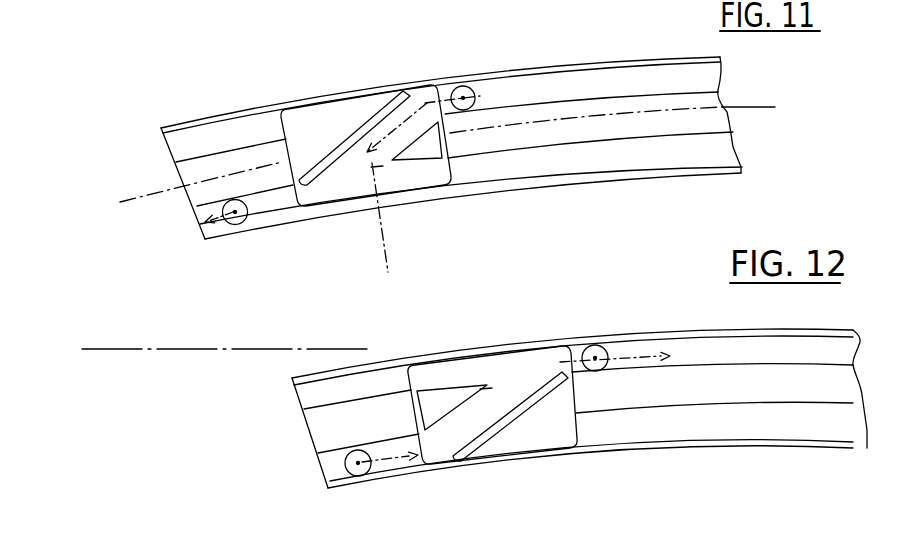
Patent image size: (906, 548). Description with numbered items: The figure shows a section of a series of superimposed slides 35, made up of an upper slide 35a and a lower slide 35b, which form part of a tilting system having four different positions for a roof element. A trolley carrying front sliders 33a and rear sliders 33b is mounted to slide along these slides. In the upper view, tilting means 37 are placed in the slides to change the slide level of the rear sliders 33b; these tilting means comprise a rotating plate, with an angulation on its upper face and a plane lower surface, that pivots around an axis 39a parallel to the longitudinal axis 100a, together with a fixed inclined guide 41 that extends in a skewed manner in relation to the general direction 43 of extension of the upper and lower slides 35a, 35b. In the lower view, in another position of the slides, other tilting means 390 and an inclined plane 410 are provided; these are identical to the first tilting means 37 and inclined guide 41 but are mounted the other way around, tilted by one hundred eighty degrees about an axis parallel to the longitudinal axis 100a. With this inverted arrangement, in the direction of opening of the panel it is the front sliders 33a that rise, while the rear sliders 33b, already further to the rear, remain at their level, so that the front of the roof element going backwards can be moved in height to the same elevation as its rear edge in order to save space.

In FIG. 11, the front sliders 33a is at (234, 226).
In FIG. 12, the front sliders 33a is at (600, 345).
In FIG. 11, the rear sliders 33b is at (463, 86).
In FIG. 12, the superimposed slides 35 is at (702, 456).
In FIG. 11, the upper slide 35a is at (556, 87).
In FIG. 12, the upper slide 35a is at (316, 394).
In FIG. 11, the lower slide 35b is at (285, 197).
In FIG. 12, the lower slide 35b is at (603, 437).
In FIG. 11, the tilting means 37 is at (361, 150).
In FIG. 11, the axis 39a is at (408, 236).
In FIG. 11, the fixed inclined guide 41 is at (323, 153).
In FIG. 11, the general direction of extension of the slides 43 is at (135, 197).
In FIG. 12, the tilting means 390 is at (467, 382).
In FIG. 12, the inclined plane 410 is at (487, 440).
In FIG. 12, the longitudinal axis 100a is at (98, 350).